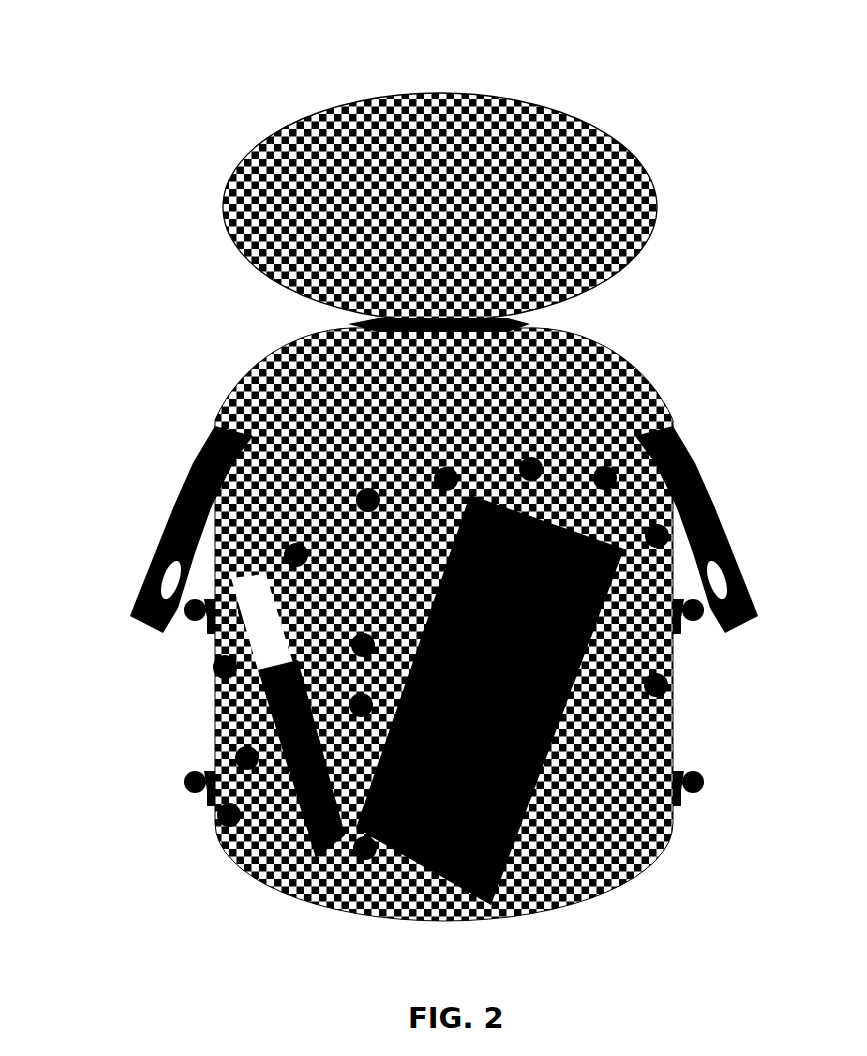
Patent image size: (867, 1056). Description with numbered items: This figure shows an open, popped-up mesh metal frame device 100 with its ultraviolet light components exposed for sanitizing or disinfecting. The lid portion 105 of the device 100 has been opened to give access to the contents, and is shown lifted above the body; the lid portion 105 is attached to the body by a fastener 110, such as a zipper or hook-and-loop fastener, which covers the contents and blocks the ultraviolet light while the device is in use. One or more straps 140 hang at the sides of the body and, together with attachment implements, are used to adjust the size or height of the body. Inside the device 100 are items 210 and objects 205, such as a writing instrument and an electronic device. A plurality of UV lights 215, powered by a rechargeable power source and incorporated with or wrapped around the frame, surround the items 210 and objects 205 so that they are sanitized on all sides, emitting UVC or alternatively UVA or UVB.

The device 100 is at (238, 58).
The lid portion 105 is at (247, 197).
The fastener 110 is at (380, 317).
The straps 140 is at (160, 524).
The objects 205 is at (548, 727).
The items 210 is at (380, 727).
The UV lights 215 is at (216, 659).